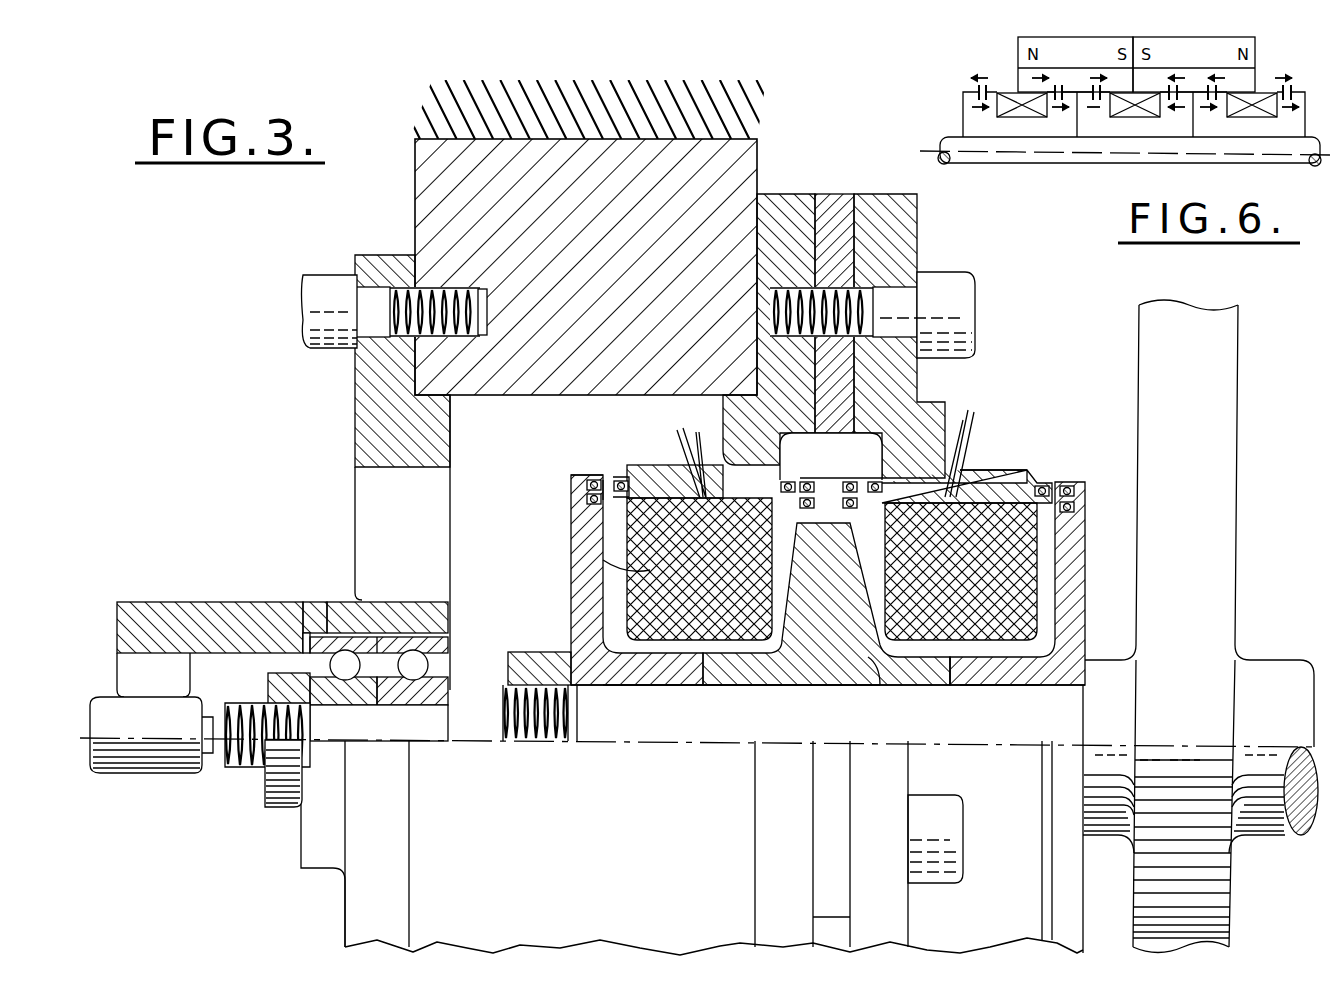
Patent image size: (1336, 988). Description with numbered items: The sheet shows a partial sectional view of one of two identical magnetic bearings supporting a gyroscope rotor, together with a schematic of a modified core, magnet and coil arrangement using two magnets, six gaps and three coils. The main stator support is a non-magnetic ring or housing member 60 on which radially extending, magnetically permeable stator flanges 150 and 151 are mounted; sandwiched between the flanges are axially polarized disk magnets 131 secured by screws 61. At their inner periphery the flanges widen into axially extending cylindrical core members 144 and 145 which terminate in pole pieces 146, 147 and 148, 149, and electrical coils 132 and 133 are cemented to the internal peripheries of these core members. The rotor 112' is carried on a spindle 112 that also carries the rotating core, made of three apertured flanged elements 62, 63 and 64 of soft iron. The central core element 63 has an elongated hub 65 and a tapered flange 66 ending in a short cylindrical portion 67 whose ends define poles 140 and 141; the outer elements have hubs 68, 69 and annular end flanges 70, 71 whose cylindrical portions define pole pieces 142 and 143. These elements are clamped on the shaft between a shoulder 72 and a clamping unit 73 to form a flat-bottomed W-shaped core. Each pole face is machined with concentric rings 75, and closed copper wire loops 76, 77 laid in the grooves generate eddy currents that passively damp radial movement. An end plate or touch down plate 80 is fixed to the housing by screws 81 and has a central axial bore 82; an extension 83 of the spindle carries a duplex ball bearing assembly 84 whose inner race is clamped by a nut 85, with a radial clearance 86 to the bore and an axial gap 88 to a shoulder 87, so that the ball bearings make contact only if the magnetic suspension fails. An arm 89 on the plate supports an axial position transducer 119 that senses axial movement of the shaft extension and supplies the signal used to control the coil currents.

The ring member 60 is at (415, 207).
The screws 61 is at (980, 305).
The core element 62 is at (664, 692).
The central core element 63 is at (806, 692).
The core element 64 is at (1006, 692).
The elongated hub 65 is at (759, 687).
The tapered flange 66 is at (826, 604).
The cylindrical portion 67 is at (841, 468).
The elongated hub 68 is at (622, 686).
The elongated hub 69 is at (960, 688).
The annular end flange 70 is at (571, 625).
The annular end flange 71 is at (1085, 608).
The shoulder 72 is at (1083, 725).
The clamping unit 73 is at (505, 650).
The concentric rings 75 is at (598, 475).
The closed loop 76 is at (587, 498).
The closed loop 77 is at (631, 476).
The end plate 80 is at (355, 436).
The screws 81 is at (303, 318).
The central axial bore 82 is at (329, 603).
The extension 83 is at (452, 712).
The duplex ball bearing assembly 84 is at (388, 637).
The nut 85 is at (267, 795).
The radial clearance 86 is at (418, 637).
The shoulder 87 is at (303, 652).
The gap 88 is at (305, 603).
The arm 89 is at (137, 602).
The spindle 112 is at (700, 846).
The rotor 112' is at (1204, 626).
The axial position transducer 119 is at (142, 773).
The disk magnets 131 is at (843, 193).
The electrical coil 132 is at (603, 570).
The electrical coil 133 is at (884, 688).
The pole 140 is at (699, 569).
The pole 141 is at (961, 571).
The pole piece 142 is at (587, 480).
The pole piece 143 is at (1066, 485).
The cylindrical core member 144 is at (662, 460).
The cylindrical core member 145 is at (987, 470).
The pole piece 146 is at (606, 475).
The pole piece 147 is at (798, 480).
The pole piece 148 is at (862, 480).
The pole piece 149 is at (1041, 485).
The stator flange 150 is at (790, 193).
The stator flange 151 is at (935, 186).